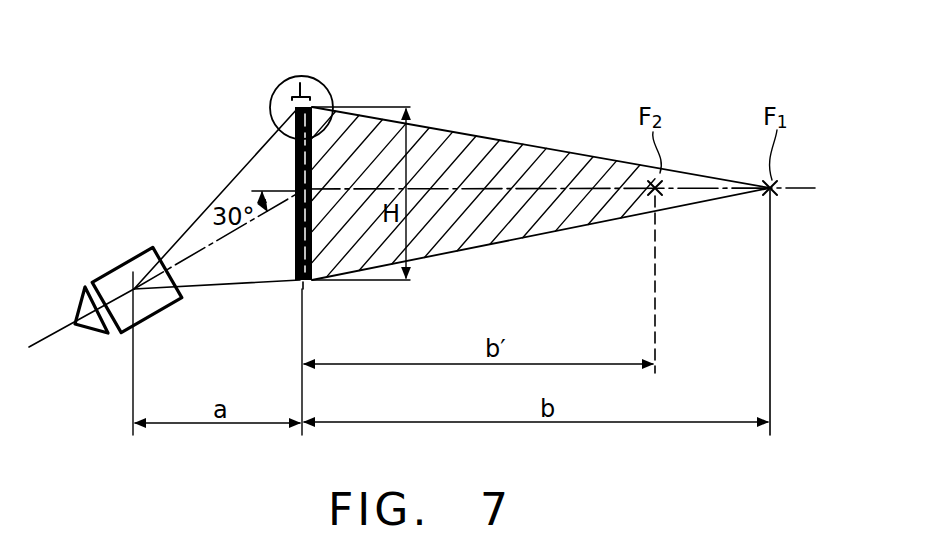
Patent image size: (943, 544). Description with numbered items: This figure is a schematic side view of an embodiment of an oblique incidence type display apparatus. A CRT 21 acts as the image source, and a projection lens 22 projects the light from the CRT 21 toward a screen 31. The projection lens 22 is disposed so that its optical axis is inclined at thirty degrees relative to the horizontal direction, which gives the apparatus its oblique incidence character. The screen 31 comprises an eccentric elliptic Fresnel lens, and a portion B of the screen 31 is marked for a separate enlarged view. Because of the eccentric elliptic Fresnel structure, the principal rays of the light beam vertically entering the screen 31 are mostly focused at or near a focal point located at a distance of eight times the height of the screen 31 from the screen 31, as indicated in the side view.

The CRT 21 is at (85, 288).
The projection lens 22 is at (147, 247).
The screen 31 is at (300, 83).
The portion of the screen B is at (322, 80).